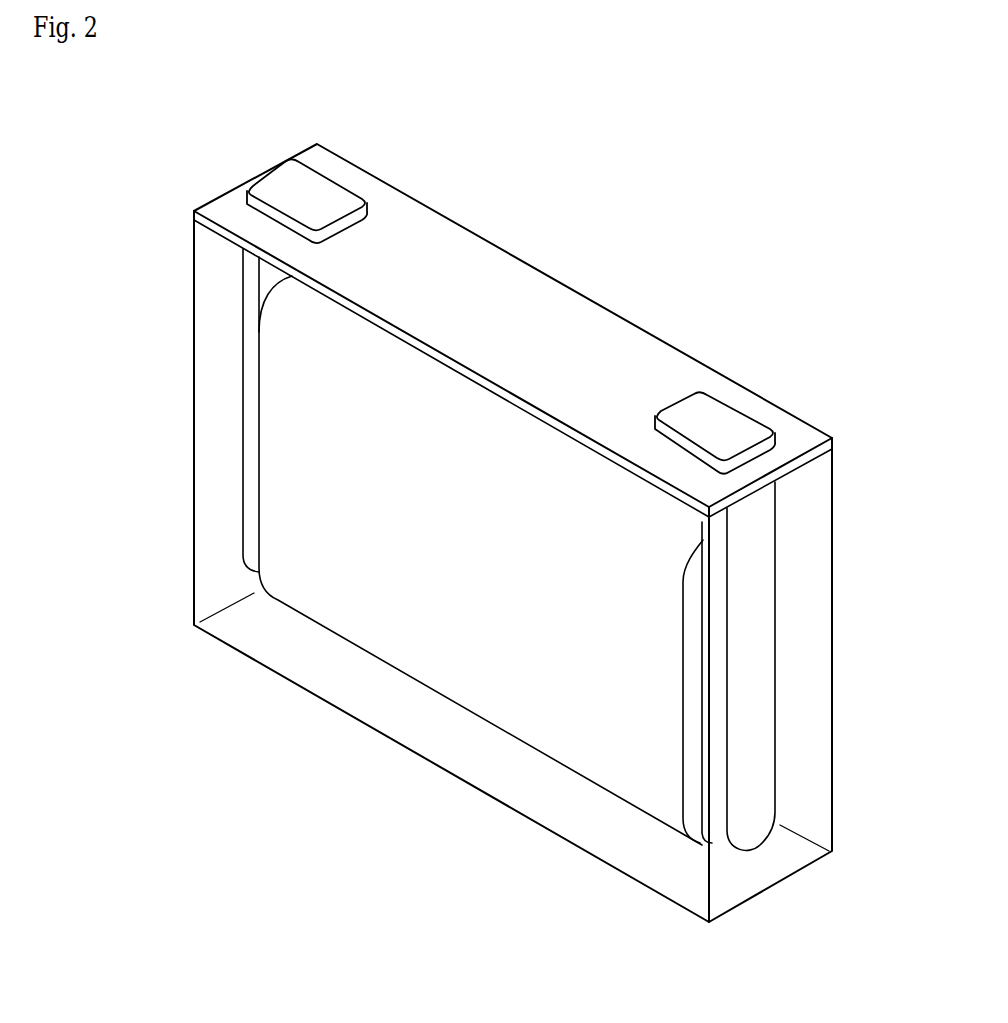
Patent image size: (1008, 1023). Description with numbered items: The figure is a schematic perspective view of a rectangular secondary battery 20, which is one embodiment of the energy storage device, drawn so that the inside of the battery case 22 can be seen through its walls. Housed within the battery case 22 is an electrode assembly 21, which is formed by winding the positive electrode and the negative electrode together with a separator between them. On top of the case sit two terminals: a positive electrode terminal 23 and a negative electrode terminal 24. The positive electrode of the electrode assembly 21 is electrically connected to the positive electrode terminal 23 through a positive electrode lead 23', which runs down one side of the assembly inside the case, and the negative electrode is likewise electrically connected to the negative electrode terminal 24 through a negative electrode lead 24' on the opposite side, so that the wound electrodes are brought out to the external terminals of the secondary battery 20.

The secondary battery 20 is at (678, 277).
The electrode assembly 21 is at (485, 551).
The battery case 22 is at (193, 356).
The positive electrode terminal 23 is at (307, 157).
The positive electrode lead 23' is at (192, 410).
The negative electrode terminal 24 is at (715, 389).
The negative electrode lead 24' is at (812, 666).